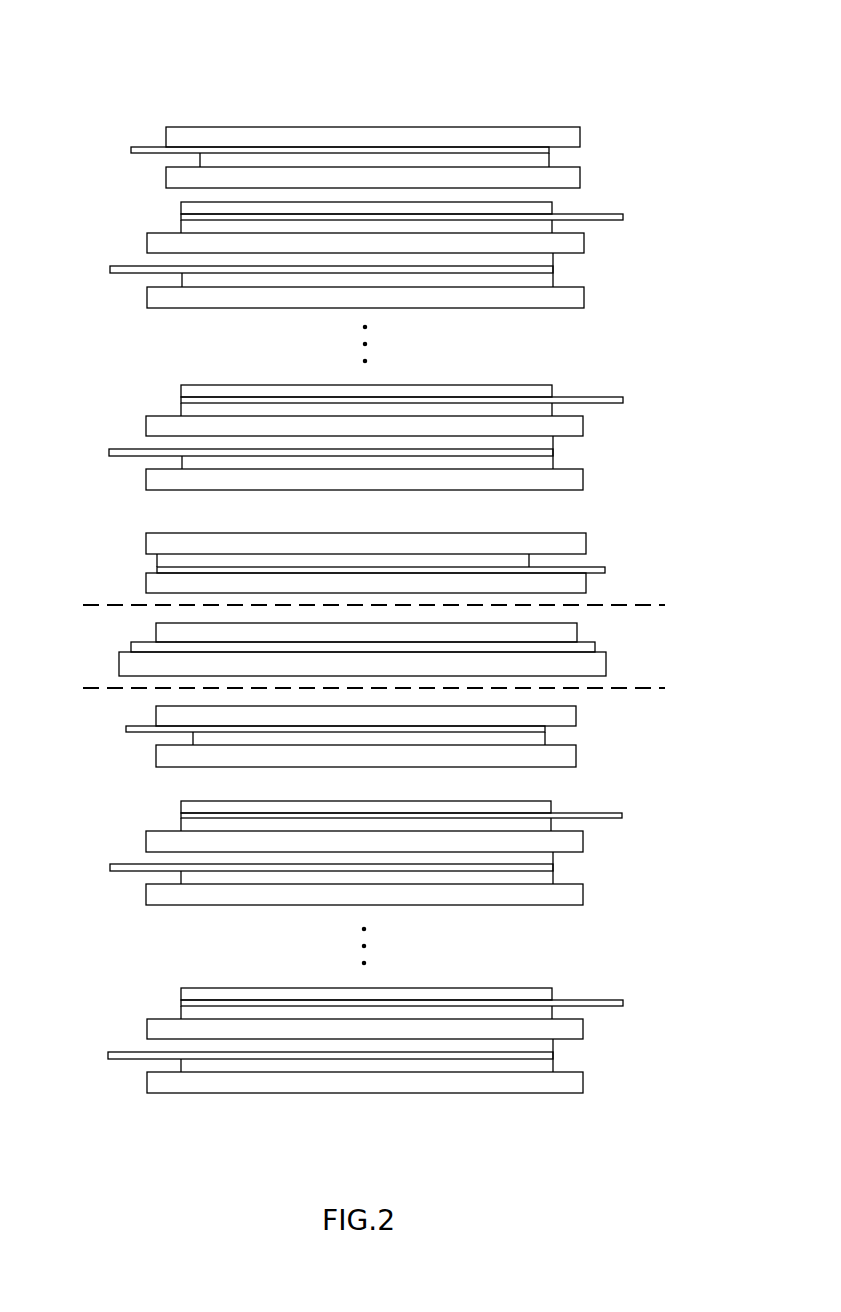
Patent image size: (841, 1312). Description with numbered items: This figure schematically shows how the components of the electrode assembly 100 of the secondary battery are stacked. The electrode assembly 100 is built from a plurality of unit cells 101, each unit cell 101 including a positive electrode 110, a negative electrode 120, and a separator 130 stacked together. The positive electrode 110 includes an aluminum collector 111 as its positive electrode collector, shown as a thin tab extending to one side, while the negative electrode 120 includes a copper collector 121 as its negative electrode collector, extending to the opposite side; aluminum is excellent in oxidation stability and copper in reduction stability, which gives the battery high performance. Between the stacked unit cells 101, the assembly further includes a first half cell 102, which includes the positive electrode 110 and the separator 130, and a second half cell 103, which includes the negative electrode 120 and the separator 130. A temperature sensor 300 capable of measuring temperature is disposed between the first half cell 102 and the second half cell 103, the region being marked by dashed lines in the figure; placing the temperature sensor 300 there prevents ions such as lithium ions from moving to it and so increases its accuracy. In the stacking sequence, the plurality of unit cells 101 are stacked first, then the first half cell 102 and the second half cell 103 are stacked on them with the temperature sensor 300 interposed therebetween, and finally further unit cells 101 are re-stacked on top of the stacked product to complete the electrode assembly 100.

The electrode assembly 100 is at (127, 47).
The unit cell 101 is at (637, 380).
The first half cell 102 is at (637, 532).
The second half cell 103 is at (637, 705).
The temperature sensor 300 is at (637, 618).
The positive electrode 110 is at (157, 988).
The aluminum collector 111 is at (623, 816).
The negative electrode 120 is at (573, 1040).
The copper collector 121 is at (110, 867).
The separator 130 is at (575, 843).